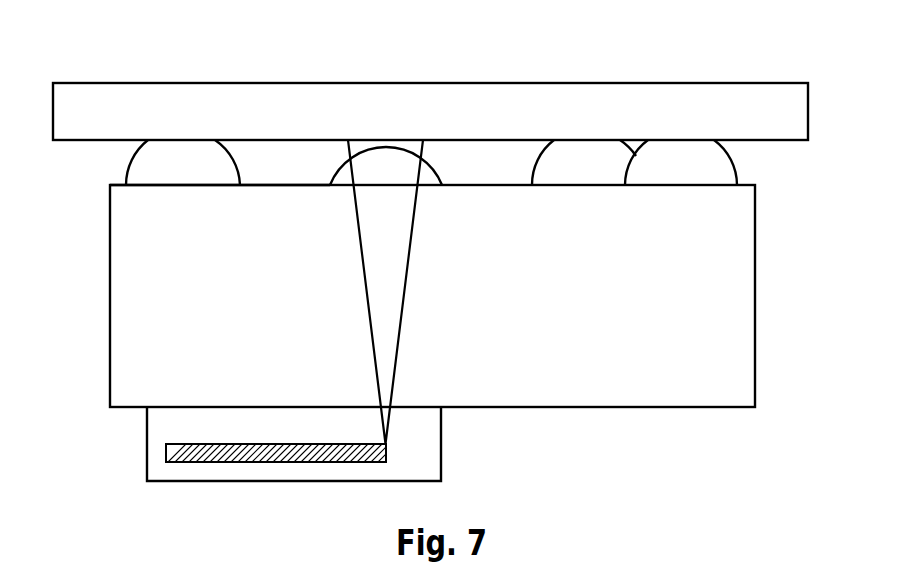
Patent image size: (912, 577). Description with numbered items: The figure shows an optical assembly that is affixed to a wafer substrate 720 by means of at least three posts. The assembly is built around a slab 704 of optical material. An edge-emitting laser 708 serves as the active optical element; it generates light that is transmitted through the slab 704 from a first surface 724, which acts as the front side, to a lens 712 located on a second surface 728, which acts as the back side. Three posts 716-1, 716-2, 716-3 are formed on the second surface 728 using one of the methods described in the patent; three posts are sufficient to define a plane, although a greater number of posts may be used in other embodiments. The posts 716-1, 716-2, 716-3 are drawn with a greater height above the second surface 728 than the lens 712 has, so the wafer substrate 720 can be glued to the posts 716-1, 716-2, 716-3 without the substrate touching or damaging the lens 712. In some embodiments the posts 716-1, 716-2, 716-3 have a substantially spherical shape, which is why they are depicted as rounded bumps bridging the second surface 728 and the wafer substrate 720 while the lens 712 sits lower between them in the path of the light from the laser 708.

The slab 704 is at (717, 371).
The edge-emitting laser 708 is at (256, 445).
The lens 712 is at (328, 176).
The post 716-1 is at (135, 153).
The post 716-2 is at (543, 148).
The post 716-3 is at (718, 148).
The wafer substrate 720 is at (166, 83).
The first surface 724 is at (551, 407).
The second surface 728 is at (276, 186).